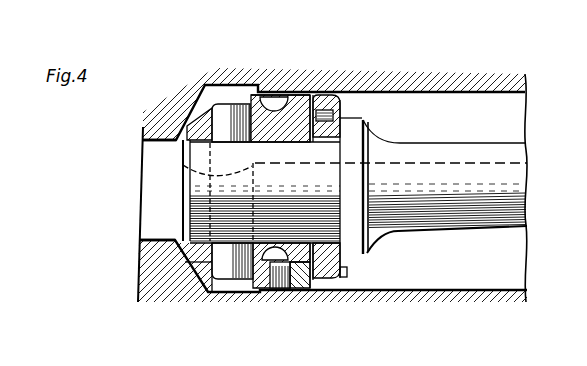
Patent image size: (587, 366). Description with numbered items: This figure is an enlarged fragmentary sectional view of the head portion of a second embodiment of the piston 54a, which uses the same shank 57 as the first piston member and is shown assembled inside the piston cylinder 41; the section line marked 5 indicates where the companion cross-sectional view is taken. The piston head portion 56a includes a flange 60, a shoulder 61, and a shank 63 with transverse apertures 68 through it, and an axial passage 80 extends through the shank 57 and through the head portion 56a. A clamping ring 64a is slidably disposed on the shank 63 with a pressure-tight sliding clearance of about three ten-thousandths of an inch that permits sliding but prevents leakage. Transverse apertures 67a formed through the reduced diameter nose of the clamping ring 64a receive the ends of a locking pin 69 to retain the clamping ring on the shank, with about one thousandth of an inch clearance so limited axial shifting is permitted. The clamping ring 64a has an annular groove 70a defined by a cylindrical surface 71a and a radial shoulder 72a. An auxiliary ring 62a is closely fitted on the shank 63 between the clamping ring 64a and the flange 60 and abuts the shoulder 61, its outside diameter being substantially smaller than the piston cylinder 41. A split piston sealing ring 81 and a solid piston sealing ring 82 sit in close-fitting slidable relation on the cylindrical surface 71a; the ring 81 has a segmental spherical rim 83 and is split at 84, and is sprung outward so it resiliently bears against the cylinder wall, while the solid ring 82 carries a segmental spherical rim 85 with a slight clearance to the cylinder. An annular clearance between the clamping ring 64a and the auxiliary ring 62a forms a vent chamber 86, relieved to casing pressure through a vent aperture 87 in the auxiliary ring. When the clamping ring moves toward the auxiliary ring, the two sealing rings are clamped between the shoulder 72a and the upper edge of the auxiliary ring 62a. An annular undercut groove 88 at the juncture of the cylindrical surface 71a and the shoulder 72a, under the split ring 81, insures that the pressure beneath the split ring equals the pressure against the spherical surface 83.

The piston cylinder 41 is at (419, 93).
The piston 54a is at (459, 104).
The transverse apertures 68 is at (208, 168).
The transverse apertures 67a is at (212, 114).
The locking pin 69 is at (214, 272).
The clamping ring 64a is at (236, 282).
The segmental spherical outer surface 83 is at (262, 93).
The solid piston sealing ring 82 is at (292, 92).
The split piston sealing ring 81 is at (265, 88).
The segmental spherical outer surface 85 is at (316, 92).
The vent aperture 87 is at (354, 126).
The flange 60 is at (364, 119).
The shoulder 61 is at (337, 153).
The shank 63 is at (377, 256).
The shank 57 is at (462, 234).
The axial passage 80 is at (473, 159).
The split 84 is at (288, 240).
The annular undercut groove 88 is at (256, 292).
The radial shoulder 72a is at (275, 292).
The cylindrical surface 71a is at (300, 292).
The annular groove 70a is at (322, 292).
The vent chamber 86 is at (337, 292).
The auxiliary ring 62a is at (354, 293).
The piston head portion 56a is at (349, 271).
The section line 5- 5 is at (303, 74).